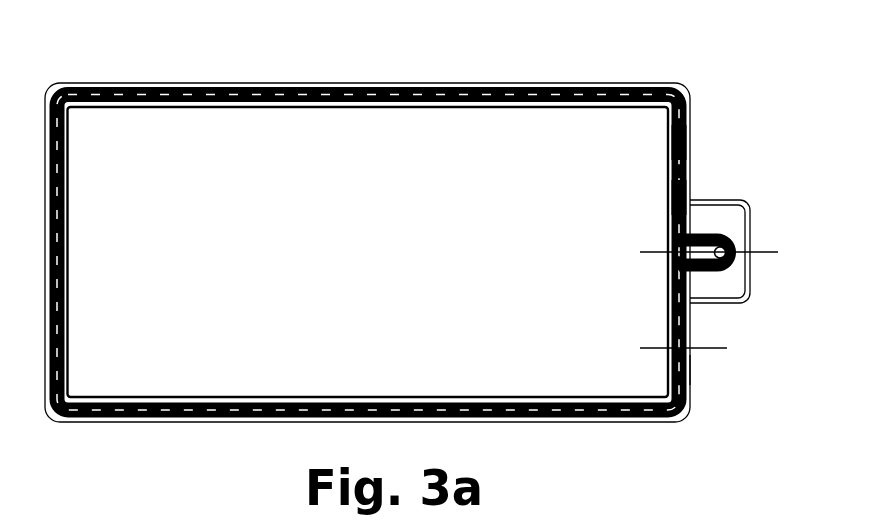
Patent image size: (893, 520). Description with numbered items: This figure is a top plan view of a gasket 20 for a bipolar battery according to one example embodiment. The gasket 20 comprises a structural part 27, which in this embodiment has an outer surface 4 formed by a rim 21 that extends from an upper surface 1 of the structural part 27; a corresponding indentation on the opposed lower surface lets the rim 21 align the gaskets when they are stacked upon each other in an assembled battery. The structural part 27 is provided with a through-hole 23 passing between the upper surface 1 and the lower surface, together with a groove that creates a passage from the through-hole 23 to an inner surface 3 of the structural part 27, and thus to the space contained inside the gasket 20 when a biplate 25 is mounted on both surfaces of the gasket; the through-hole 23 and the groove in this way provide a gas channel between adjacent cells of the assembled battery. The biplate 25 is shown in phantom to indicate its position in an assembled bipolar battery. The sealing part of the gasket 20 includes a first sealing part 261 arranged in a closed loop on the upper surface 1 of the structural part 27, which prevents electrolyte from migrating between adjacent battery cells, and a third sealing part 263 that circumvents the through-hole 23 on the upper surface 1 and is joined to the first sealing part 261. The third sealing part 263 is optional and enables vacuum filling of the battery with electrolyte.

The gasket 20 is at (126, 43).
The biplate 25 is at (452, 84).
The upper surface 1 is at (676, 80).
The rim 21 is at (695, 389).
The inner surface 3 is at (666, 197).
The outer surface 4 is at (693, 368).
The first sealing part 261 is at (671, 140).
The third sealing part 263 is at (713, 233).
The structural part 27 is at (728, 292).
The through-hole 23 is at (735, 233).